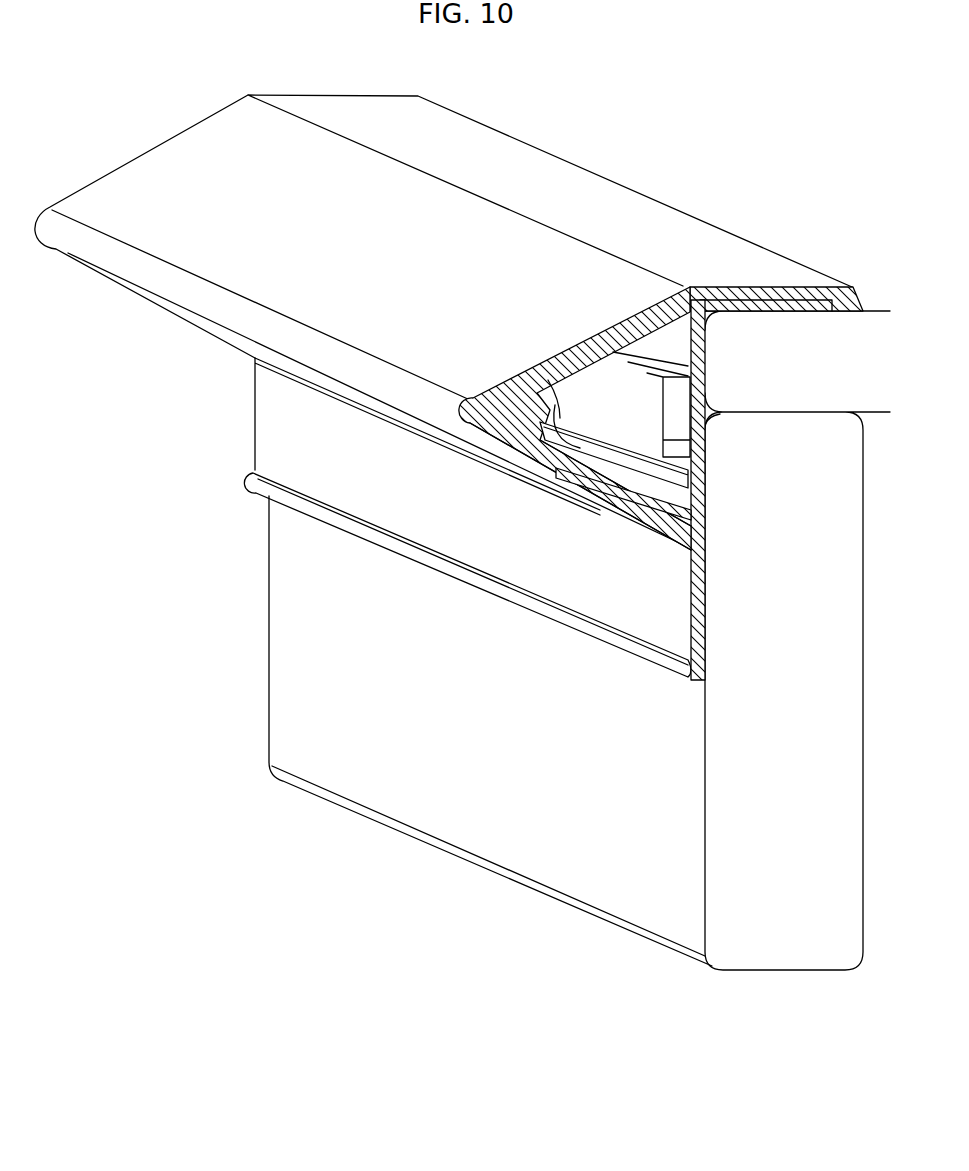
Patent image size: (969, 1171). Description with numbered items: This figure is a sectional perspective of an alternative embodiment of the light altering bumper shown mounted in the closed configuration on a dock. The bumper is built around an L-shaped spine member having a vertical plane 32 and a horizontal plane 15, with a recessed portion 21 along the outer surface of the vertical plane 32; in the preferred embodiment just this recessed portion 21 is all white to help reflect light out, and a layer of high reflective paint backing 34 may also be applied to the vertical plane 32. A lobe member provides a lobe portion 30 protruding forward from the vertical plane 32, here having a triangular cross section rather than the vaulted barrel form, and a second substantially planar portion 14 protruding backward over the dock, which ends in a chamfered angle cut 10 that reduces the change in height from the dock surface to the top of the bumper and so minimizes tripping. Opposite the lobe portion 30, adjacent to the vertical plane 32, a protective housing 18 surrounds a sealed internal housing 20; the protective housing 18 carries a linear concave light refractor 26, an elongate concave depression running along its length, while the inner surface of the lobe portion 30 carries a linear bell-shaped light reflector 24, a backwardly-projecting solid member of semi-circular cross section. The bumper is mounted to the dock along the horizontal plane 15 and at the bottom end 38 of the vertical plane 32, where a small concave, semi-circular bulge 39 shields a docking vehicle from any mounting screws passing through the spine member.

The chamfered angle cut 10 is at (864, 294).
The second substantially planar portion 14 is at (712, 289).
The horizontal plane 15 is at (777, 303).
The protective housing 18 is at (650, 356).
The sealed internal housing 20 is at (690, 455).
The recessed portion 21 is at (705, 418).
The linear bell-shaped light reflector 24 is at (560, 418).
The linear concave light refractor 26 is at (642, 420).
The lobe portion 30 is at (550, 358).
The vertical plane 32 is at (700, 492).
The high reflective paint backing 34 is at (706, 538).
The bottom end 38 is at (706, 642).
The small concave, semi-circular bulge 39 is at (684, 673).